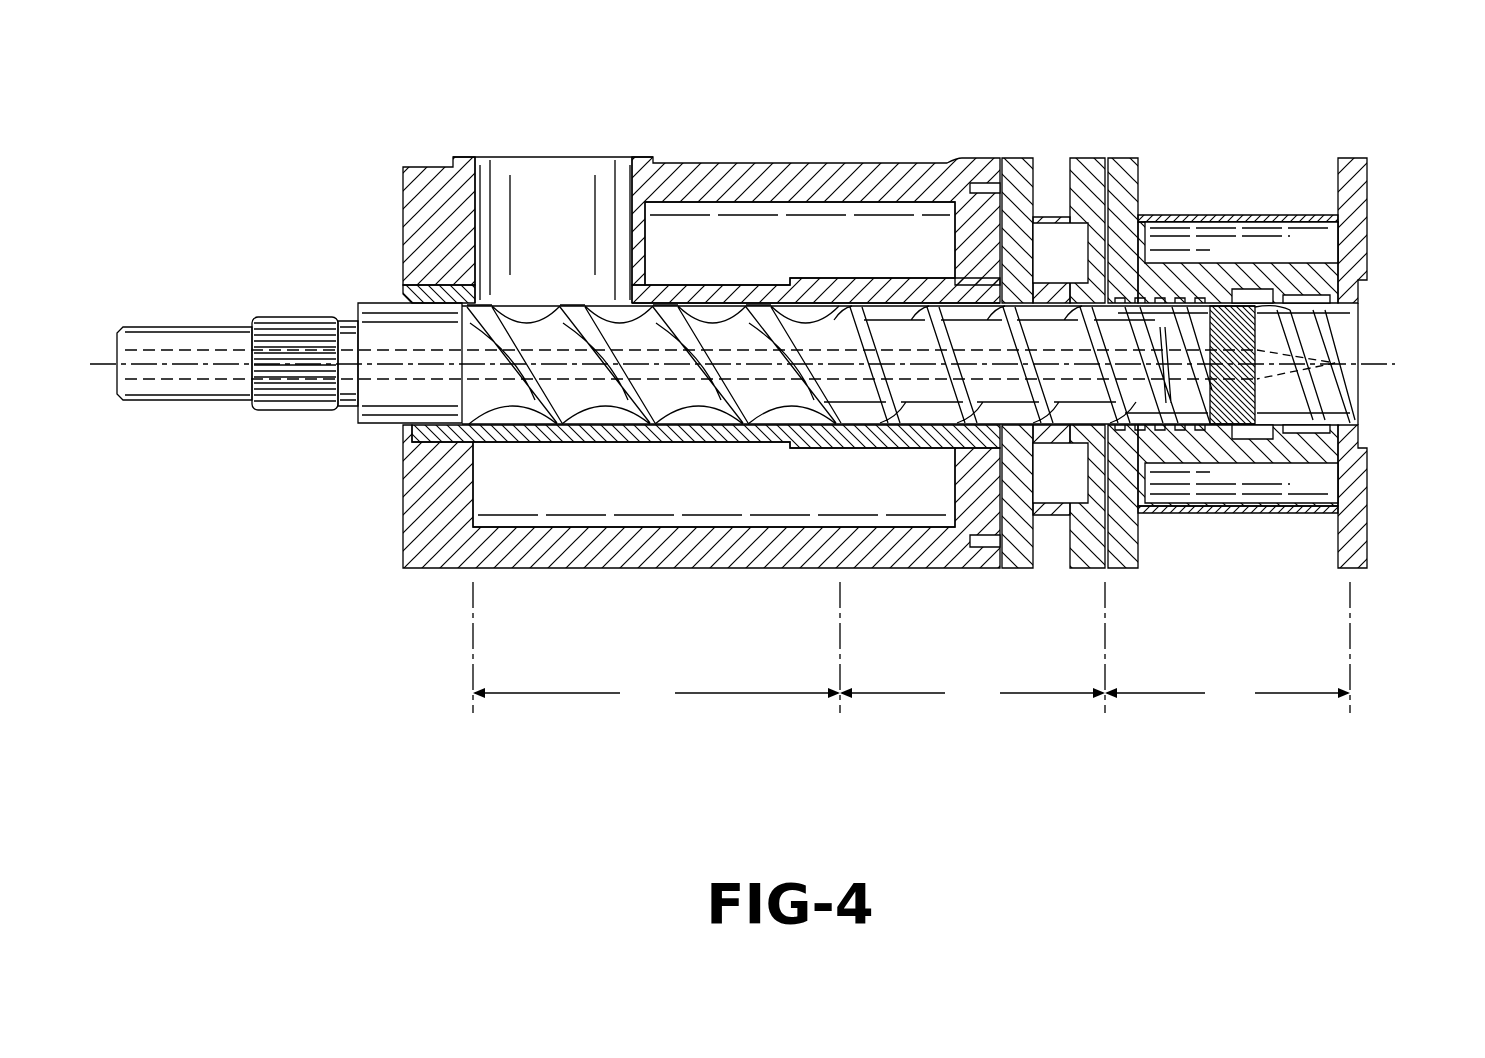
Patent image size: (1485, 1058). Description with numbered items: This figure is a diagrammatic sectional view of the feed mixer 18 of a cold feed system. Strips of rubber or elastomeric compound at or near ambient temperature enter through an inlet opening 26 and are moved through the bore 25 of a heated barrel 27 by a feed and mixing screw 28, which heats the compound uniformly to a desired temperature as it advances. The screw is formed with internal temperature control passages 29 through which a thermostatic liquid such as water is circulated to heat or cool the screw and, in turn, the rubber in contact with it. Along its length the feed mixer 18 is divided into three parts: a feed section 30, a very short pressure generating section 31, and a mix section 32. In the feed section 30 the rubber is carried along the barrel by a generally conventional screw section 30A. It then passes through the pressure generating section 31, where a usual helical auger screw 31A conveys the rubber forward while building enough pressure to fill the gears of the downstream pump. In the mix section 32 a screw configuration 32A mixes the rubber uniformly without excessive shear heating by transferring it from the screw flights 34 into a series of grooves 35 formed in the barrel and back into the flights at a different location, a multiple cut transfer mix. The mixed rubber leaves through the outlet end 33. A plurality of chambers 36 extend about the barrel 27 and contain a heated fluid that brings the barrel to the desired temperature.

The feed mixer 18 is at (836, 150).
The bore 25 is at (908, 404).
The inlet opening 26 is at (582, 185).
The heated barrel 27 is at (692, 297).
The feed and mixing screw 28 is at (384, 413).
The internal temperature control passages 29 is at (225, 365).
The feed section 30 is at (656, 647).
The screw section 30A is at (598, 407).
The pressure generating section 31 is at (973, 647).
The helical auger screw 31A is at (941, 381).
The mix section 32 is at (1228, 647).
The screw configuration 32A is at (1240, 423).
The outlet end 33 is at (1355, 316).
The screw flights 34 is at (1172, 408).
The grooves 35 is at (1213, 305).
The chambers 36 is at (557, 505).